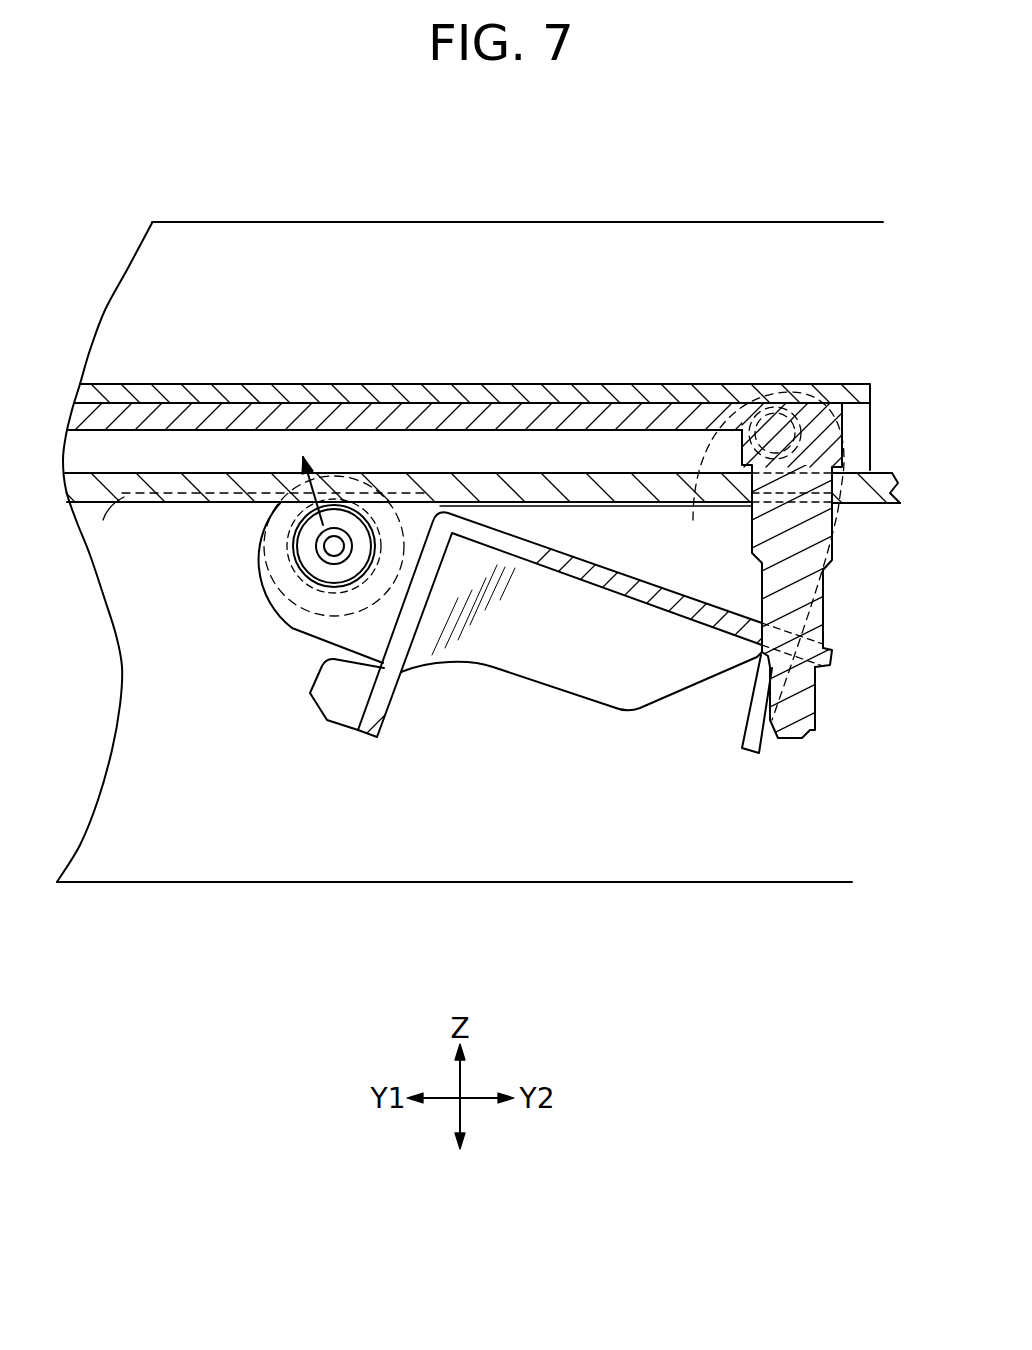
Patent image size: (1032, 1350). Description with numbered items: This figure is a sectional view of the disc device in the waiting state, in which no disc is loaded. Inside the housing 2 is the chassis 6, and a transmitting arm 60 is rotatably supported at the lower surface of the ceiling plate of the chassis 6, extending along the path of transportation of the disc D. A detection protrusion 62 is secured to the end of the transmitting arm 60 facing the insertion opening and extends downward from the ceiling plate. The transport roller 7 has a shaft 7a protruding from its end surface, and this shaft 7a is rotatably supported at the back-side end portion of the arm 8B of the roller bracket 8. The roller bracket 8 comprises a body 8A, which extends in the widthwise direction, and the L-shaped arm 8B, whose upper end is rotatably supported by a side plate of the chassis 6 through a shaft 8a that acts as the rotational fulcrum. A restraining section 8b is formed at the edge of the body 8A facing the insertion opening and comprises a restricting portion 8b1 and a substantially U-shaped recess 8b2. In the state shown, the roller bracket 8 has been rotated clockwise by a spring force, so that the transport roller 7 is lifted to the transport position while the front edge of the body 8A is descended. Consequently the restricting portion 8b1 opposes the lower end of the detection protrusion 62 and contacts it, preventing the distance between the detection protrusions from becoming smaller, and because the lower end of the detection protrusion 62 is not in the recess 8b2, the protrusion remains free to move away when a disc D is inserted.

The housing 2 is at (348, 222).
The chassis 6 is at (510, 384).
The transmitting arm 60 is at (627, 418).
The detection protrusion 62 is at (802, 598).
The shaft 8a is at (788, 392).
The disc D is at (147, 500).
The transport roller 7 is at (294, 578).
The shaft 7a is at (334, 552).
The roller bracket 8 is at (645, 639).
The body 8A is at (563, 566).
The arm 8B is at (502, 767).
The restraining section 8b is at (795, 731).
The restricting portion 8b1 is at (844, 719).
The recess 8b2 is at (722, 620).